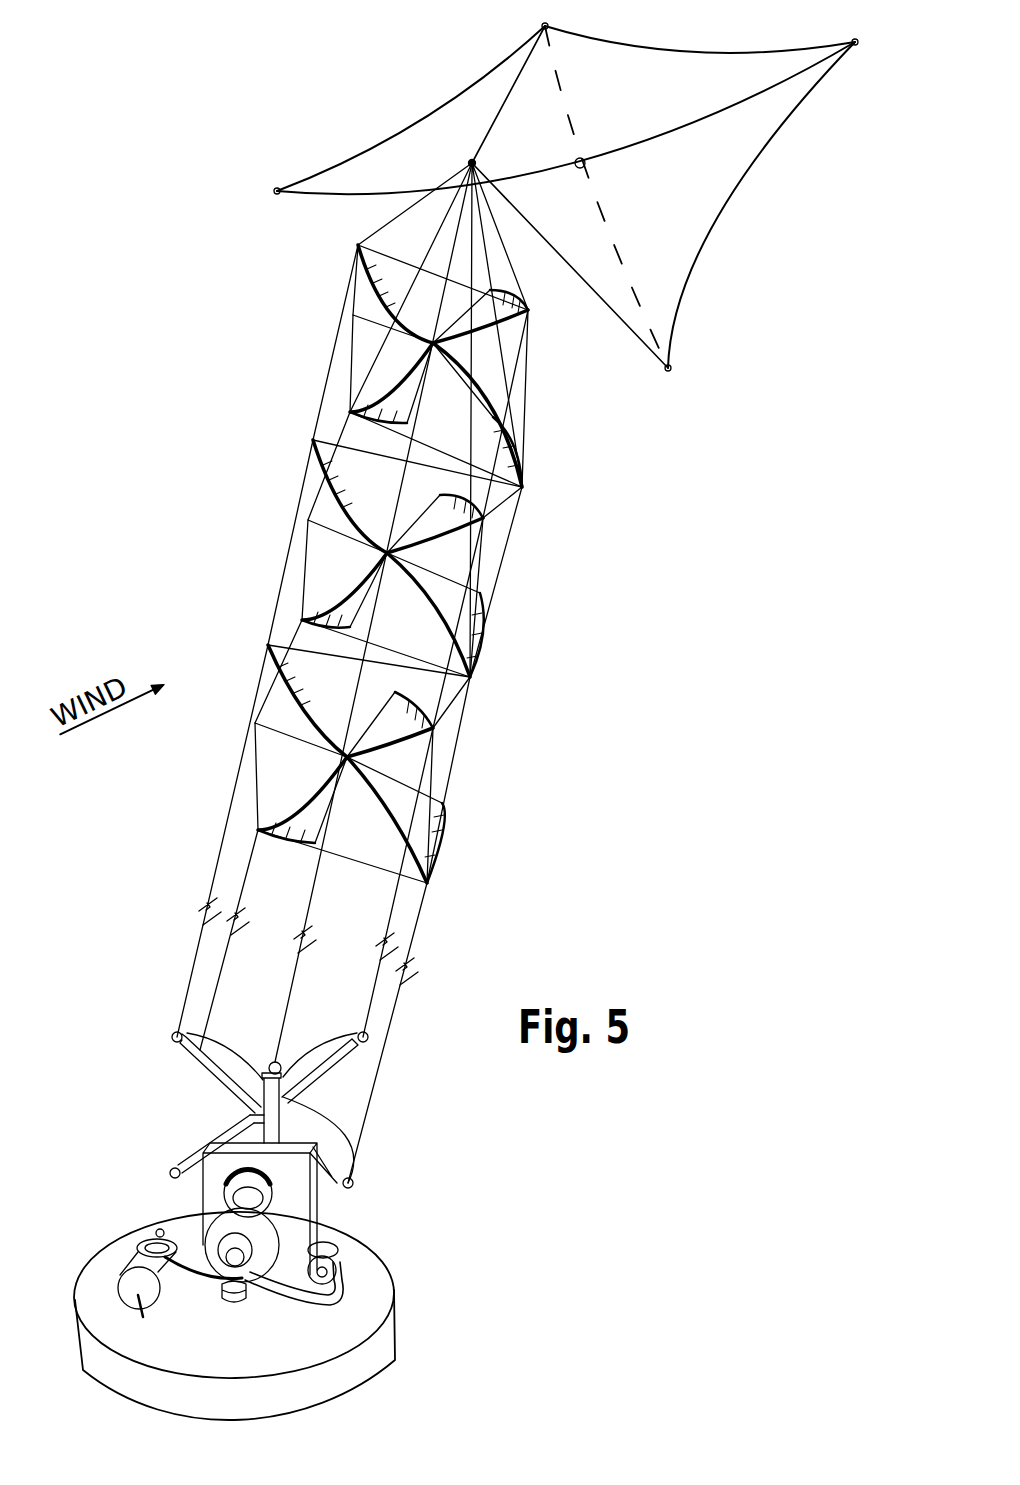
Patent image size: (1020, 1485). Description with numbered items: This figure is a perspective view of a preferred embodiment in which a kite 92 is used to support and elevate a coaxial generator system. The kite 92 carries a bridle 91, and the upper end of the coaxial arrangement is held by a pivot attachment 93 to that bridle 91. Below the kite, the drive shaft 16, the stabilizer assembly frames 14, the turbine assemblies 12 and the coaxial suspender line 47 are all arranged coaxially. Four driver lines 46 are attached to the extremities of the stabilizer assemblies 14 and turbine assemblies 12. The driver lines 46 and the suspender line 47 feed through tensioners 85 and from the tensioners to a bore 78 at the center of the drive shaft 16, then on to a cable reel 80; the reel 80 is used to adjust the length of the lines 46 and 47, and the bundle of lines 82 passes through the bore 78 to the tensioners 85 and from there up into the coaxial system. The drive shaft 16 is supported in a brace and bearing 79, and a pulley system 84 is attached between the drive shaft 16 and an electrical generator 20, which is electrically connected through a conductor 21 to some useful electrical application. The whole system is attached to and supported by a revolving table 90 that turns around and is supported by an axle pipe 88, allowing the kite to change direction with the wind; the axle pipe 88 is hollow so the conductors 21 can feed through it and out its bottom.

The kite 92 is at (606, 72).
The bridle 91 is at (487, 133).
The pivot attachment 93 is at (482, 161).
The turbine assemblies 12 is at (530, 436).
The driver lines 46 is at (187, 998).
The coaxial suspender line 47 is at (369, 612).
The tensioners 85 is at (171, 1036).
The stabilizer assembly frames 14 is at (338, 1086).
The drive shaft 16 is at (262, 1090).
The bore 78 is at (258, 1111).
The brace and bearing 79 is at (217, 1190).
The pulley system 84 is at (283, 1255).
The cable reel 80 is at (140, 1253).
The bundle of lines 82 is at (183, 1273).
The electrical generator 20 is at (338, 1257).
The conductor 21 is at (325, 1306).
The axle pipe 88 is at (237, 1307).
The revolving table 90 is at (352, 1365).